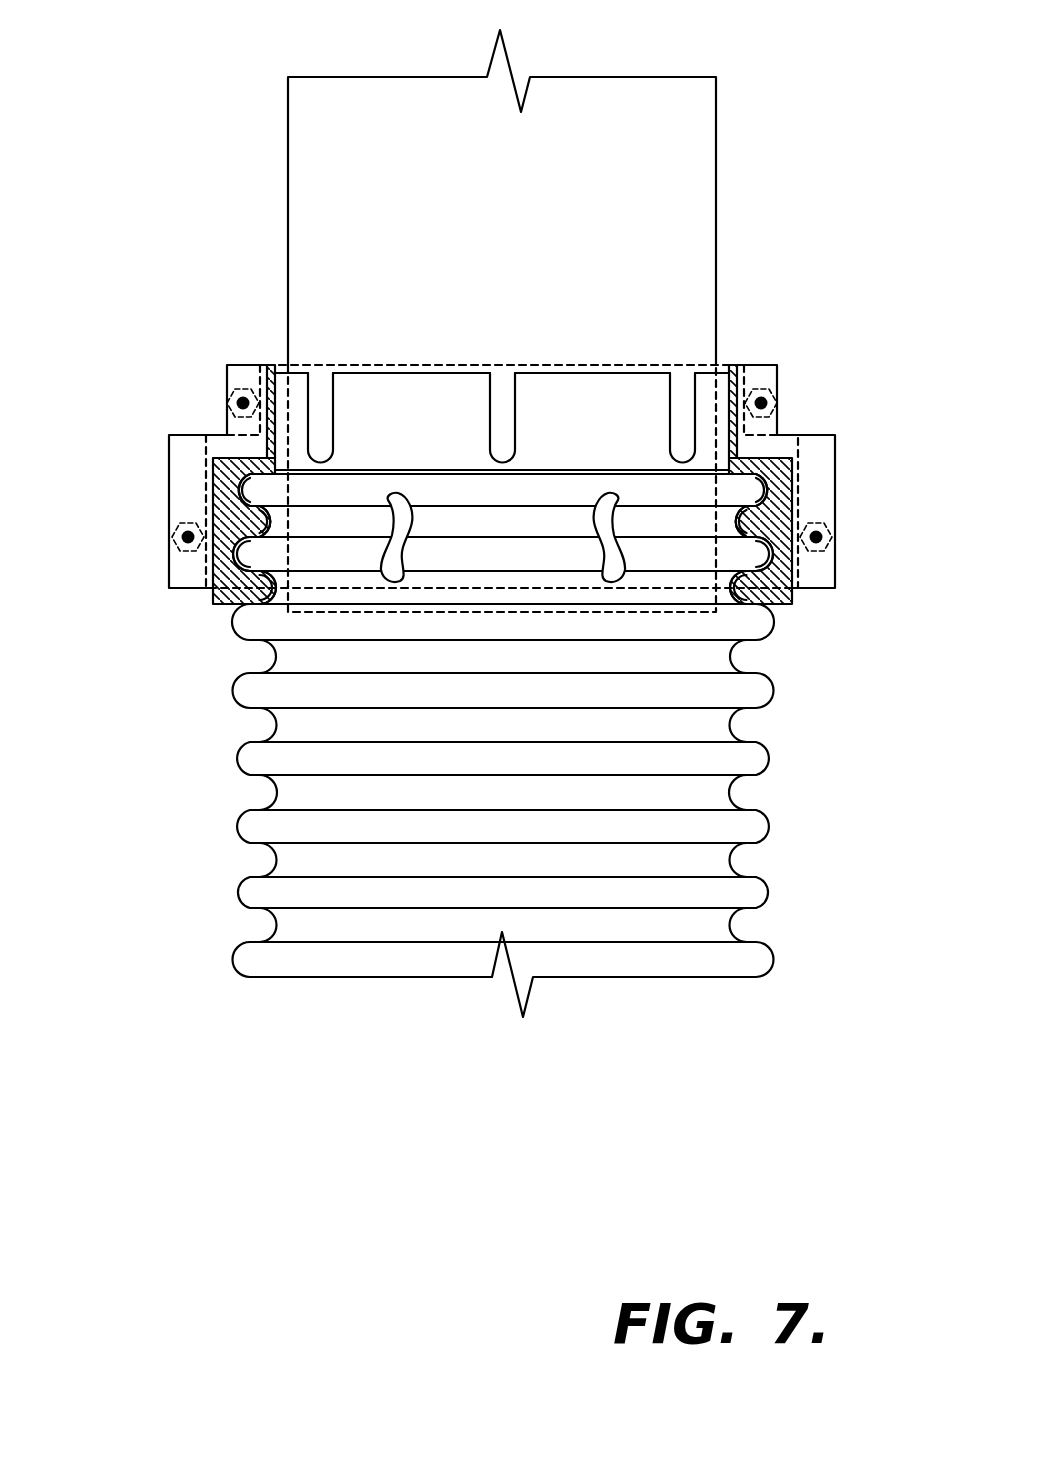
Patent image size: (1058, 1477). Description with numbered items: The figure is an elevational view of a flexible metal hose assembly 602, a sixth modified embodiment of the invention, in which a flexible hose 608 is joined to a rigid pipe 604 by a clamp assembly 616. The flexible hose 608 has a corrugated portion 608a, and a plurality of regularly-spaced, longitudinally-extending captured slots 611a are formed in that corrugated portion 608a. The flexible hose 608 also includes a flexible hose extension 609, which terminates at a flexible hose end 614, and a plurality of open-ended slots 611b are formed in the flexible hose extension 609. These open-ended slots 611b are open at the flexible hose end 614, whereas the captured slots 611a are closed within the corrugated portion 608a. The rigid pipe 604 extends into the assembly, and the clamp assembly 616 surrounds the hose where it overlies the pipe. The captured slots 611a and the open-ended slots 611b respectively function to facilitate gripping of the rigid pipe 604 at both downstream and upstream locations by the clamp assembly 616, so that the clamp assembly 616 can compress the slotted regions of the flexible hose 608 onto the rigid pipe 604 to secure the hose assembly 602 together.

The flexible hose assembly 602 is at (183, 246).
The rigid pipe 604 is at (715, 77).
The flexible hose 608 is at (575, 752).
The corrugated portion 608a is at (769, 841).
The flexible hose extension 609 is at (447, 438).
The captured slots 611a is at (615, 508).
The open-ended slots 611b is at (678, 378).
The flexible hose end 614 is at (428, 378).
The clamp assembly 616 is at (784, 370).